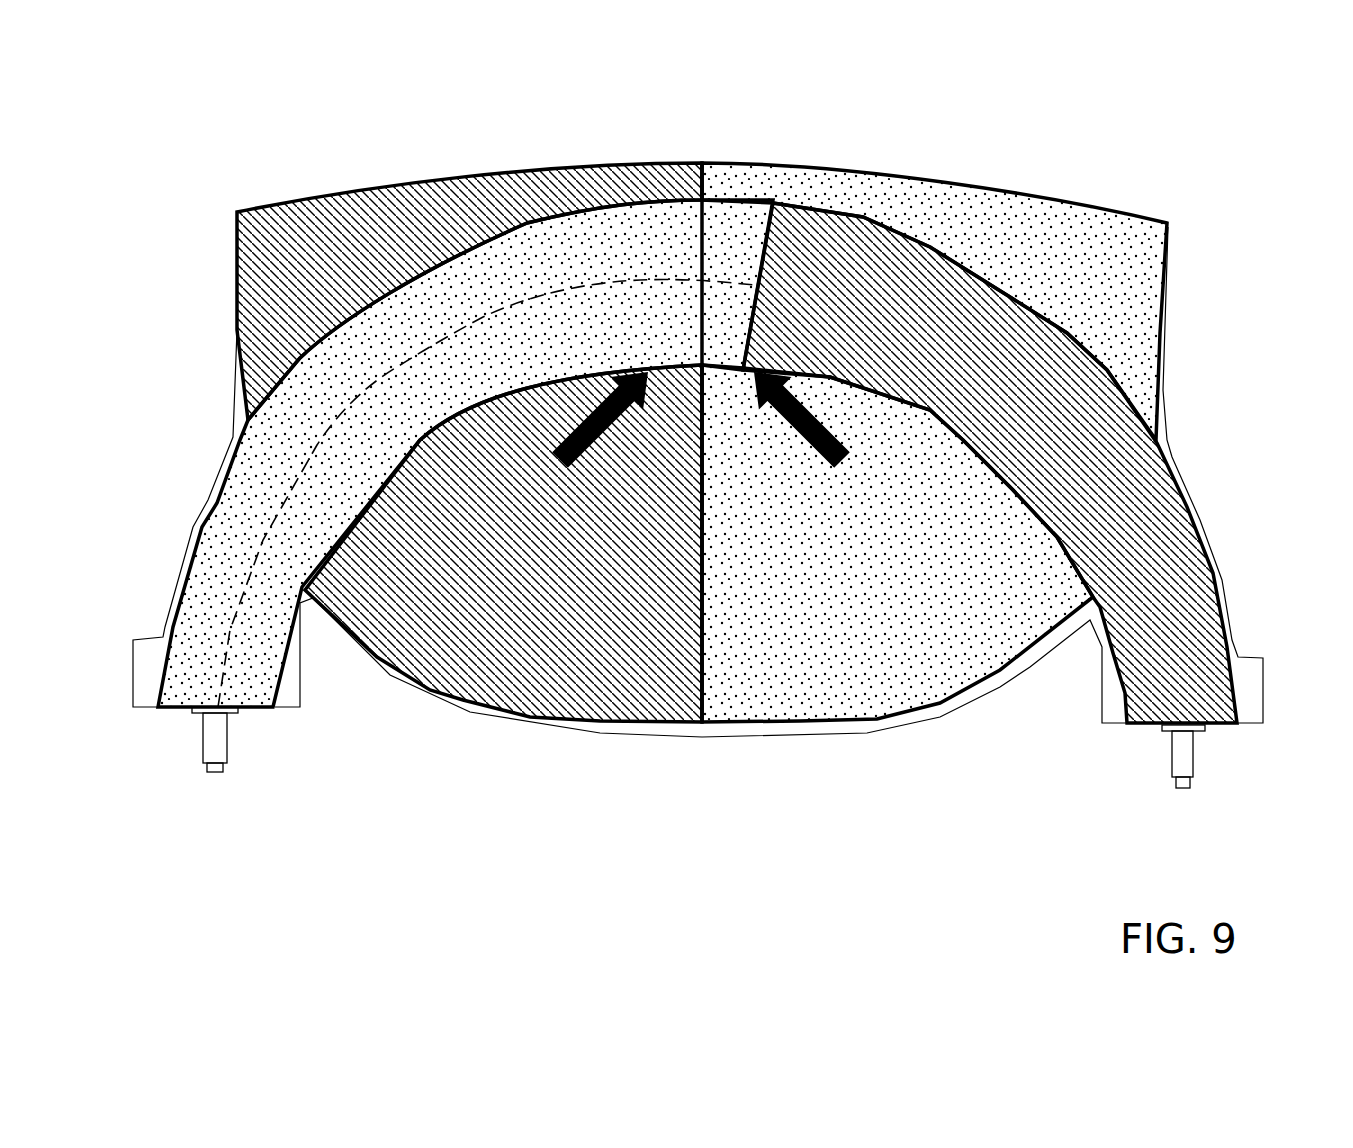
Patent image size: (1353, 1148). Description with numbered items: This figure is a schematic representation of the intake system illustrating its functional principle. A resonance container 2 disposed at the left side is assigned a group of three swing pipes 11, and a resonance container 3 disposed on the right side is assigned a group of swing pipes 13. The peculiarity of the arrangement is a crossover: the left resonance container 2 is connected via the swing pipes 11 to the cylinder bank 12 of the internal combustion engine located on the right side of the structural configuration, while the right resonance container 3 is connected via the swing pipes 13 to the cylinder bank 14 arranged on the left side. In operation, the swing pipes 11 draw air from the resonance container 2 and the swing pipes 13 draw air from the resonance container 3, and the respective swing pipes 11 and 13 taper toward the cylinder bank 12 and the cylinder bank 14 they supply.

The resonance container 2 is at (307, 220).
The resonance container 3 is at (1095, 242).
The swing pipes 11 is at (1148, 500).
The cylinder bank 12 is at (1265, 765).
The swing pipes 13 is at (217, 537).
The cylinder bank 14 is at (135, 754).